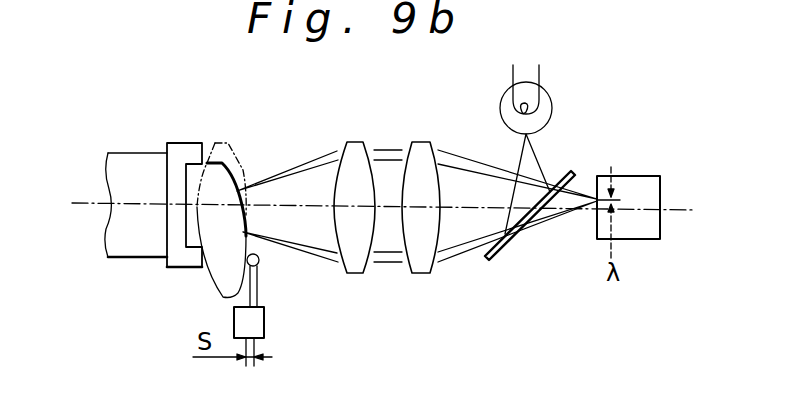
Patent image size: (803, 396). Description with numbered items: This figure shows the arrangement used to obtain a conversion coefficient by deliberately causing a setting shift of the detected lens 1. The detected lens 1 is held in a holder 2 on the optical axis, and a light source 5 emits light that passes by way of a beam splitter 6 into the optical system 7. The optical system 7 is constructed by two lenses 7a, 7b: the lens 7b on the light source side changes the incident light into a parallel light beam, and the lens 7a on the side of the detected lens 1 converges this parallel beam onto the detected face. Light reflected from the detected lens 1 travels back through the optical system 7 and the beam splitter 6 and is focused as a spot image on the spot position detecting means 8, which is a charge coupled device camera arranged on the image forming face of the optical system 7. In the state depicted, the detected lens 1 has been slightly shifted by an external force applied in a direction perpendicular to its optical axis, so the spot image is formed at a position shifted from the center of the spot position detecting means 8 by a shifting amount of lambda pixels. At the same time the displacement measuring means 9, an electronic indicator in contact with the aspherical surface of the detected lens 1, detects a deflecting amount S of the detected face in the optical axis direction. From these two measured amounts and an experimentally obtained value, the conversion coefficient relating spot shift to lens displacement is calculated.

The detected lens 1 is at (225, 145).
The lens holder 2 is at (179, 153).
The light source 5 is at (552, 108).
The beam splitter 6 is at (566, 172).
The optical system 7 is at (440, 100).
The lens 7a is at (356, 157).
The lens 7b is at (420, 157).
The spot position detecting means 8 is at (657, 188).
The displacement measuring means 9 is at (264, 318).